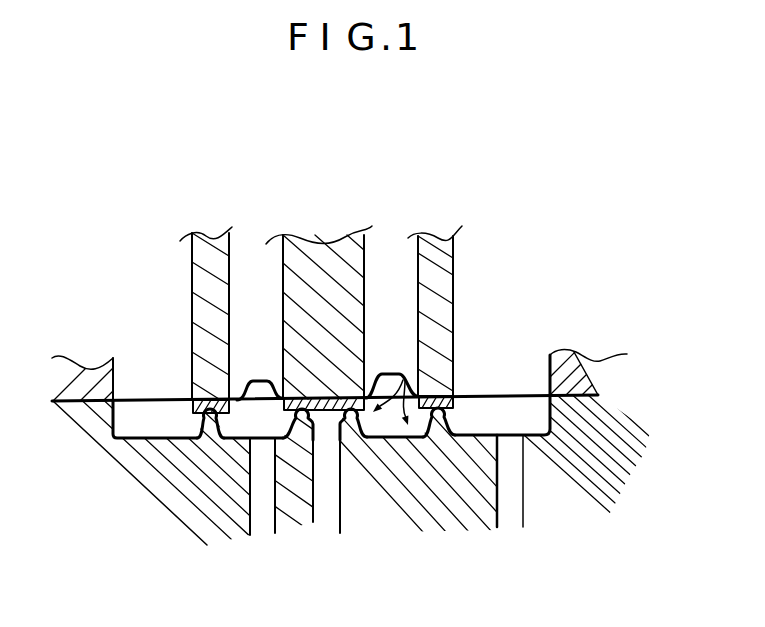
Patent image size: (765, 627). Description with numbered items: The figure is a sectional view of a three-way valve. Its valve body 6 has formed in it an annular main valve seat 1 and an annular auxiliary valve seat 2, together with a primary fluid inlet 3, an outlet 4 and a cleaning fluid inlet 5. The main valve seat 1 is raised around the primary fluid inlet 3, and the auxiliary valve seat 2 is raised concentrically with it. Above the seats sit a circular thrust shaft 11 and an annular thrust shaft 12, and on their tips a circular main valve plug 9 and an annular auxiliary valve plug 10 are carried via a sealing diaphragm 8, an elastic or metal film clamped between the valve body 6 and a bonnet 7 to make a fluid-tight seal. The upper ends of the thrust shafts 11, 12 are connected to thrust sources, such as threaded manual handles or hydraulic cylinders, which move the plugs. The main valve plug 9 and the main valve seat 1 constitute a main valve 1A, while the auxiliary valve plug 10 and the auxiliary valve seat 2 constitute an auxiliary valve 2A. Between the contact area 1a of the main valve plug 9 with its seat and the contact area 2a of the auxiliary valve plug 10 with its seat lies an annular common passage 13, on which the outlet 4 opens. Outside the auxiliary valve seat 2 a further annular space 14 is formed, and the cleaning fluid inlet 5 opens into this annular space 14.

The main valve seat 1 is at (366, 422).
The contact area of the main valve plug with the main valve seat 1a is at (298, 418).
The main valve 1A is at (388, 373).
The auxiliary valve seat 2 is at (460, 430).
The contact area of the auxiliary valve plug with the auxiliary valve seat 2a is at (208, 418).
The auxiliary valve 2A is at (463, 405).
The primary fluid inlet 3 is at (328, 420).
The outlet 4 is at (263, 443).
The cleaning fluid inlet 5 is at (535, 408).
The valve body 6 is at (607, 432).
The bonnet 7 is at (593, 360).
The sealing diaphragm 8 is at (138, 410).
The main valve plug 9 is at (318, 393).
The auxiliary valve plug 10 is at (181, 420).
The circular thrust shaft 11 is at (338, 262).
The annular thrust shaft 12 is at (203, 243).
The common passage 13 is at (406, 372).
The annular space 14 is at (538, 398).